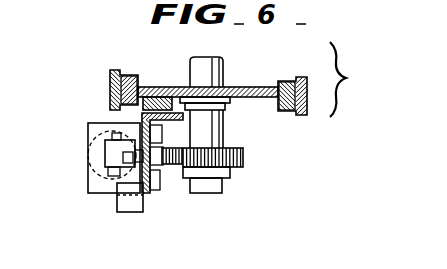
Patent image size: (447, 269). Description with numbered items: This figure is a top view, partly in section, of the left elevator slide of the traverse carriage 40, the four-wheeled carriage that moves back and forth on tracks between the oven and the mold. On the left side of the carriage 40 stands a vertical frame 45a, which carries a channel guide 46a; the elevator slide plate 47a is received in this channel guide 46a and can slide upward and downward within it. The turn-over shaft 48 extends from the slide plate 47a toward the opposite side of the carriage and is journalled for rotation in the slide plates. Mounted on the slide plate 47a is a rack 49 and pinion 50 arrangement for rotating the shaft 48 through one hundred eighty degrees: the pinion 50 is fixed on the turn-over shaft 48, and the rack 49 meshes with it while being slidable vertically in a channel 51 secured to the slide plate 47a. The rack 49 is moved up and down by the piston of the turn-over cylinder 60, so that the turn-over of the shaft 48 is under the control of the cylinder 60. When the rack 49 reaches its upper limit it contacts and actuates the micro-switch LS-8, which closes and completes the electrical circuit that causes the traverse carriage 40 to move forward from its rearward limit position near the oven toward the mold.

The traverse carriage 40 is at (360, 79).
The vertical frame 45a is at (110, 83).
The channel guide 46a is at (124, 72).
The elevator slide plate 47a is at (168, 87).
The turn-over shaft 48 is at (213, 122).
The rack 49 is at (168, 166).
The pinion 50 is at (243, 158).
The channel 51 is at (163, 170).
The turn-over cylinder 60 is at (100, 145).
The micro-switch LS-8 is at (125, 200).